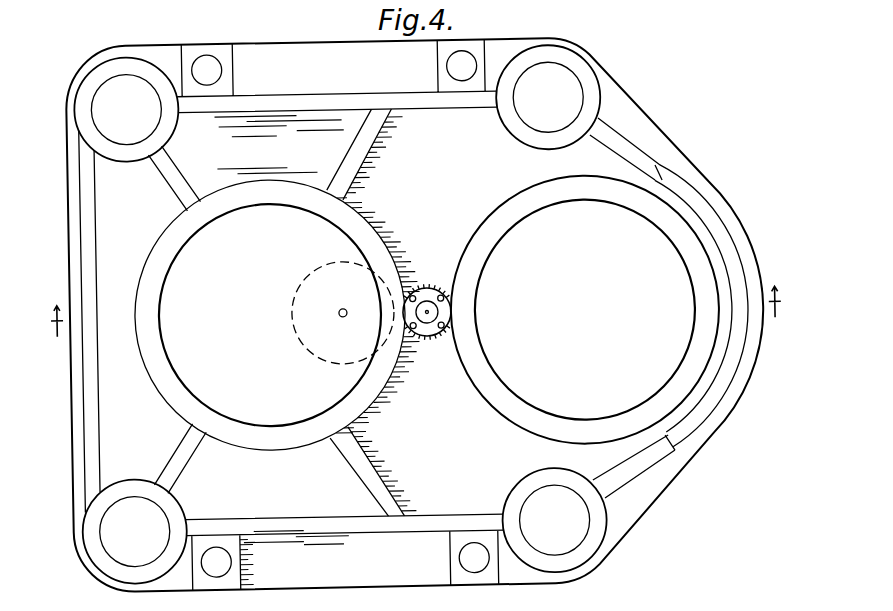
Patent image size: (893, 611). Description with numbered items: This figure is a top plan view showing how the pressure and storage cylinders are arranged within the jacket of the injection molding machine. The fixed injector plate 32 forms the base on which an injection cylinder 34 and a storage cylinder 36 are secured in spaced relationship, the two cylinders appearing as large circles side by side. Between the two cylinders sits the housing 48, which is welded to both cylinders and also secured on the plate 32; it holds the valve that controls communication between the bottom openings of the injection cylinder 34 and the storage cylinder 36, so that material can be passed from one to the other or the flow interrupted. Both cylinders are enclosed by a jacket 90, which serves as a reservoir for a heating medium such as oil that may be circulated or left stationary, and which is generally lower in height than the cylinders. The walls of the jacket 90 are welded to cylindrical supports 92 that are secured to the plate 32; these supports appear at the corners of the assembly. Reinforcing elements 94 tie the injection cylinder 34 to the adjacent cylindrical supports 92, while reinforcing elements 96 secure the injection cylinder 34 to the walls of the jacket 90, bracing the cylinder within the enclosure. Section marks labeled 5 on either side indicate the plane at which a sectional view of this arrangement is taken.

The plate 32 is at (655, 134).
The injection cylinder 34 is at (275, 440).
The storage cylinder 36 is at (503, 409).
The housing 48 is at (433, 332).
The jacket 90 is at (91, 386).
The cylindrical supports 92 is at (84, 100).
The reinforcing elements 94 is at (185, 173).
The reinforcing elements 96 is at (366, 154).
The section line 5- 5 is at (414, 311).